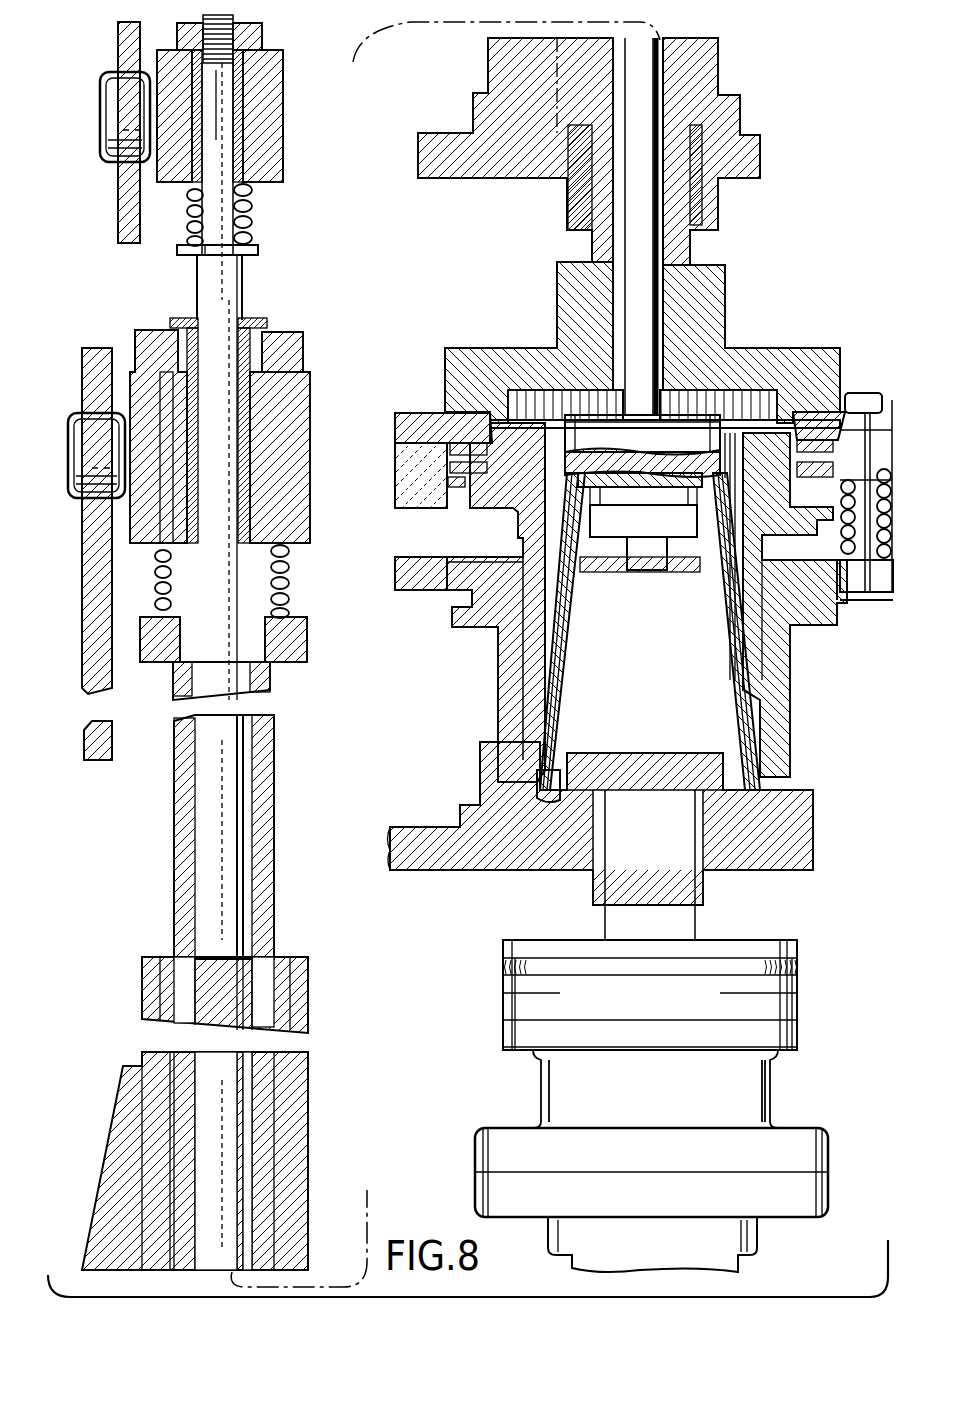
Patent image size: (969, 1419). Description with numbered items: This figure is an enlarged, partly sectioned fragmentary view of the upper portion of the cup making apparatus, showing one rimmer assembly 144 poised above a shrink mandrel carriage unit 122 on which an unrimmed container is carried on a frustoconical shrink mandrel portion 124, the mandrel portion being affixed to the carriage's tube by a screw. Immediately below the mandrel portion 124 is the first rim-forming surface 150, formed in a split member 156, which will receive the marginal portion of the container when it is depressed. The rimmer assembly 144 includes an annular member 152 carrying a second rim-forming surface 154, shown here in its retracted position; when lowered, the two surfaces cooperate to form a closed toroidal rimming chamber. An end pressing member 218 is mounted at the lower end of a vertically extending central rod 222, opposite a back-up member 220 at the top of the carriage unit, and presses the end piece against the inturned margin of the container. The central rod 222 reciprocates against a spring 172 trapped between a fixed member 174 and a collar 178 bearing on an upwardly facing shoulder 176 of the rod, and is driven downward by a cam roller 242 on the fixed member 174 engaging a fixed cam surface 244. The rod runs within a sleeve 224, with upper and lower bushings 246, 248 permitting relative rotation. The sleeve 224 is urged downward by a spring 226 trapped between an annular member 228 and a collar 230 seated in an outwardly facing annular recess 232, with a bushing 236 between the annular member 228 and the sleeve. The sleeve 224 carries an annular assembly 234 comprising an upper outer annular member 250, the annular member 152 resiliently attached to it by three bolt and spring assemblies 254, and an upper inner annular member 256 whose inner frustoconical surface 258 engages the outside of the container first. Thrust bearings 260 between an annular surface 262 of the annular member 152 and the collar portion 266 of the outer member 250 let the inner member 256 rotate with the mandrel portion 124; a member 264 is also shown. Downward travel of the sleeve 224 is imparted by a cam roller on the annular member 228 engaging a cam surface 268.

The shrink mandrel carriage unit 122 is at (708, 927).
The shrink mandrel portion 124 is at (713, 557).
The rimmer assembly 144 is at (722, 253).
The first rim-forming surface 150 is at (768, 793).
The annular member 152 is at (800, 760).
The second rim-forming surface 154 is at (537, 792).
The split member 156 is at (745, 700).
The spring 172 is at (255, 200).
The fixed member 174 is at (275, 108).
The upwardly facing shoulder 176 is at (177, 252).
The collar 178 is at (258, 250).
The end pressing member 218 is at (680, 440).
The back-up member 220 is at (595, 478).
The central rod 222 is at (232, 300).
The sleeve 224 is at (178, 850).
The spring 226 is at (70, 500).
The annular member 228 is at (300, 390).
The collar 230 is at (300, 640).
The annular recess 232 is at (275, 668).
The annular assembly 234 is at (820, 432).
The bushing 236 is at (300, 505).
The cam roller 242 is at (102, 108).
The cam surface 244 is at (118, 38).
The upper bushing 246 is at (180, 322).
The lower bushing 248 is at (663, 318).
The upper outer annular member 250 is at (825, 440).
The bolt and spring assemblies 254 is at (892, 600).
The upper inner annular member 256 is at (540, 655).
The inner frustoconically shaped surface 258 is at (558, 712).
The thrust bearings 260 is at (822, 447).
The annular surface 262 is at (846, 412).
The block 264 is at (402, 455).
The collar portion 266 is at (425, 428).
The cam surface 268 is at (92, 652).